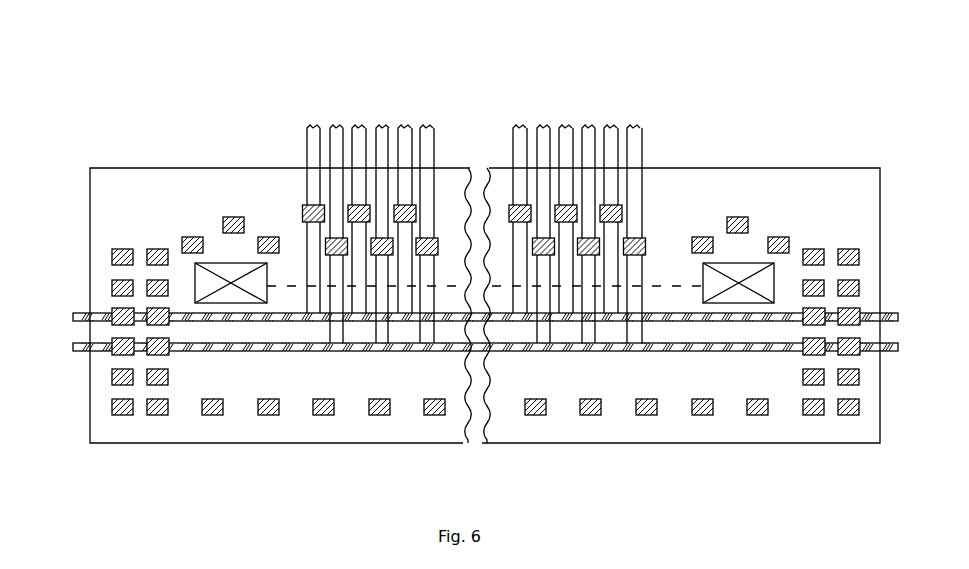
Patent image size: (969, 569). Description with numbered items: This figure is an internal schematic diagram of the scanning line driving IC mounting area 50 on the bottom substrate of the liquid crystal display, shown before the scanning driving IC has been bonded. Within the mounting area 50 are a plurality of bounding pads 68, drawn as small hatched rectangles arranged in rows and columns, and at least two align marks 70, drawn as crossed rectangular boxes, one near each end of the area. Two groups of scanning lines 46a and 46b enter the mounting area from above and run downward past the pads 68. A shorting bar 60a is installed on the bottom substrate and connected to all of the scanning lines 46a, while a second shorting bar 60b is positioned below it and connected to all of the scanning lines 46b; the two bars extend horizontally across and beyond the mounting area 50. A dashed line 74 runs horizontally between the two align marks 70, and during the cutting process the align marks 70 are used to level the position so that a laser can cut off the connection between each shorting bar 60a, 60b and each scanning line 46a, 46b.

The scanning line driving IC mounting area 50 is at (851, 168).
The shorting bar 60a is at (85, 317).
The shorting bar 60b is at (85, 347).
The bounding pads 68 is at (236, 217).
The align marks 70 is at (212, 263).
The reference axis line 74 is at (679, 284).
The scanning lines 46a is at (313, 142).
The scanning lines 46b is at (337, 137).